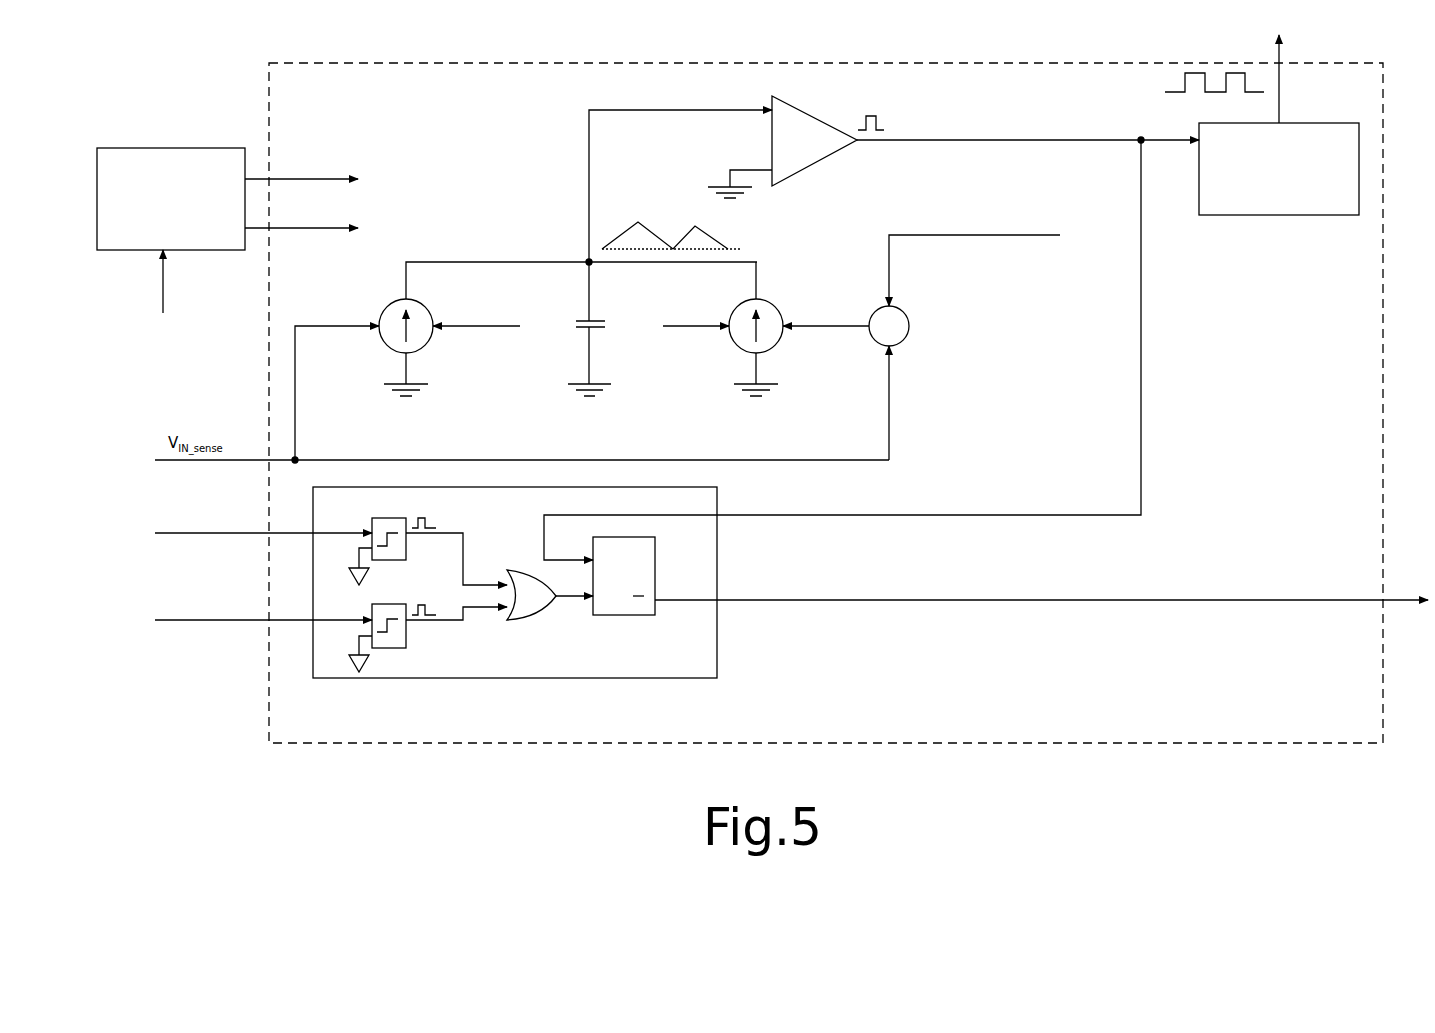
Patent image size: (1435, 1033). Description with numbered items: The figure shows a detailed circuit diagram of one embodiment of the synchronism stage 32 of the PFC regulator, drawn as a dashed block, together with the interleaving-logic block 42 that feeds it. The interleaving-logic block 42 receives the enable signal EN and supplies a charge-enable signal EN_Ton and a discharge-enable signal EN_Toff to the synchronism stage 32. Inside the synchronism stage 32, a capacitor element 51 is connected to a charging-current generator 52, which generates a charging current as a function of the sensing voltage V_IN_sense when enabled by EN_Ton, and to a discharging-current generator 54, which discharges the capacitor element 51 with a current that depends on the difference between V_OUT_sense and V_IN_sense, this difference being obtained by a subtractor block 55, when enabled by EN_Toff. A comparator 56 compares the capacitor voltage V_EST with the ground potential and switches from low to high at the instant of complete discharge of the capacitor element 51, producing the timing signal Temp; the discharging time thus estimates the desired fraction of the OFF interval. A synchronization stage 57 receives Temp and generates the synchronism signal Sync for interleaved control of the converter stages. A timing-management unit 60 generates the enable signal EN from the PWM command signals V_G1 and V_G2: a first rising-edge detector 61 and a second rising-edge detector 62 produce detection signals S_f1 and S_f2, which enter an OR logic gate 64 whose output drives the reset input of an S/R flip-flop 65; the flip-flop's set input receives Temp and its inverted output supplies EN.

The synchronism stage 32 is at (368, 747).
The interleaving-logic block 42 is at (170, 146).
The capacitor element 51 is at (590, 329).
The charging-current generator 52 is at (380, 338).
The discharging-current generator 54 is at (780, 343).
The subtractor block 55 is at (898, 345).
The comparator 56 is at (812, 115).
The synchronization stage 57 is at (1310, 215).
The timing-management unit 60 is at (717, 641).
The first rising-edge detector 61 is at (378, 518).
The second rising-edge detector 62 is at (372, 632).
The OR logic gate 64 is at (520, 575).
The S/R flip-flop 65 is at (628, 615).